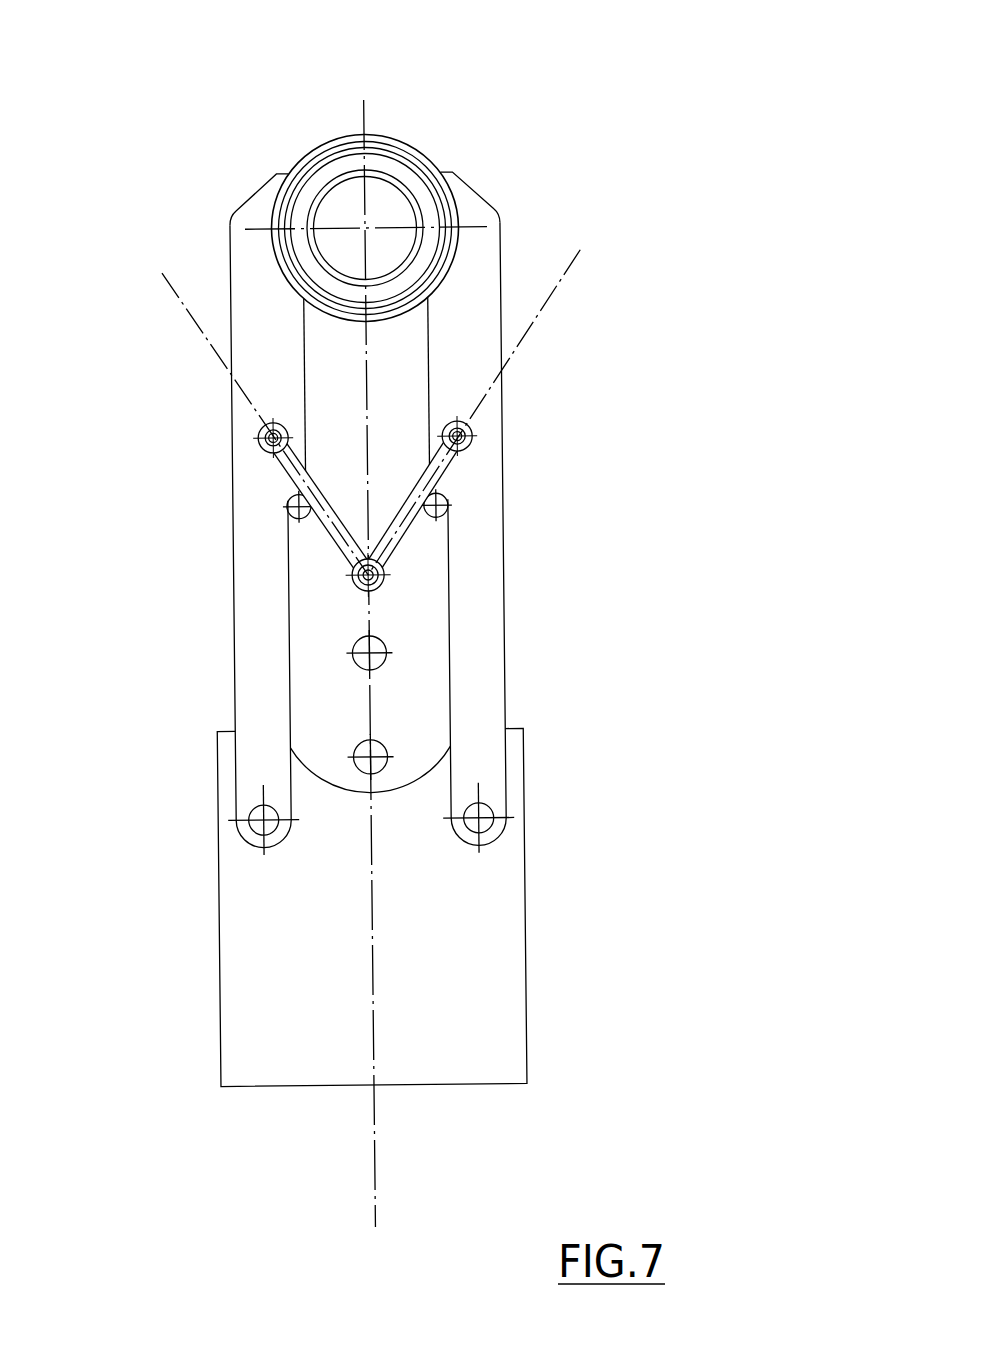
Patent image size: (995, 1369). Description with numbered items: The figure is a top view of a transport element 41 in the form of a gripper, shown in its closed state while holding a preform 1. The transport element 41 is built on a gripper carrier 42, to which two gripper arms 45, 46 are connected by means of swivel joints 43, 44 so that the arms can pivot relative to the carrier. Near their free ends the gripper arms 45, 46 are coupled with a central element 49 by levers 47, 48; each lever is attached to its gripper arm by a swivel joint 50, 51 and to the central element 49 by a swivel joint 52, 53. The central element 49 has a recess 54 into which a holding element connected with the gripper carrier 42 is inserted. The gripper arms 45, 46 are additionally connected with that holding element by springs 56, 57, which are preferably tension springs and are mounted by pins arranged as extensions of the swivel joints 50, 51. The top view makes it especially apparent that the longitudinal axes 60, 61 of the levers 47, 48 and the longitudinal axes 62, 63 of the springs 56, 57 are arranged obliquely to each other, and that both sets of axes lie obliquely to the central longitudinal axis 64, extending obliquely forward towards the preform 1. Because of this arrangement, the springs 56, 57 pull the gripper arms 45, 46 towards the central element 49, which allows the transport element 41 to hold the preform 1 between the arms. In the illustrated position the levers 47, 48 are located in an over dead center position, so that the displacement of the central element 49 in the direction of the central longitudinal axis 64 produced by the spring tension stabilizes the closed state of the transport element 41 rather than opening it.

The preform 1 is at (412, 175).
The transport element 41 is at (605, 598).
The gripper carrier 42 is at (495, 976).
The swivel joint 43 is at (252, 830).
The swivel joint 44 is at (490, 825).
The gripper arm 45 is at (287, 615).
The gripper arm 46 is at (490, 662).
The lever 47 is at (282, 496).
The lever 48 is at (448, 495).
The central element 49 is at (330, 697).
The swivel joint 50 is at (260, 432).
The swivel joint 51 is at (472, 426).
The swivel joint 52 is at (292, 505).
The swivel joint 53 is at (447, 508).
The recess 54 is at (385, 582).
The spring 56 is at (337, 545).
The spring 57 is at (398, 540).
The longitudinal axis of lever 60 is at (187, 312).
The longitudinal axis of lever 61 is at (568, 275).
The longitudinal axis of spring 62 is at (276, 474).
The longitudinal axis of spring 63 is at (462, 470).
The central longitudinal axis 64 is at (373, 1138).